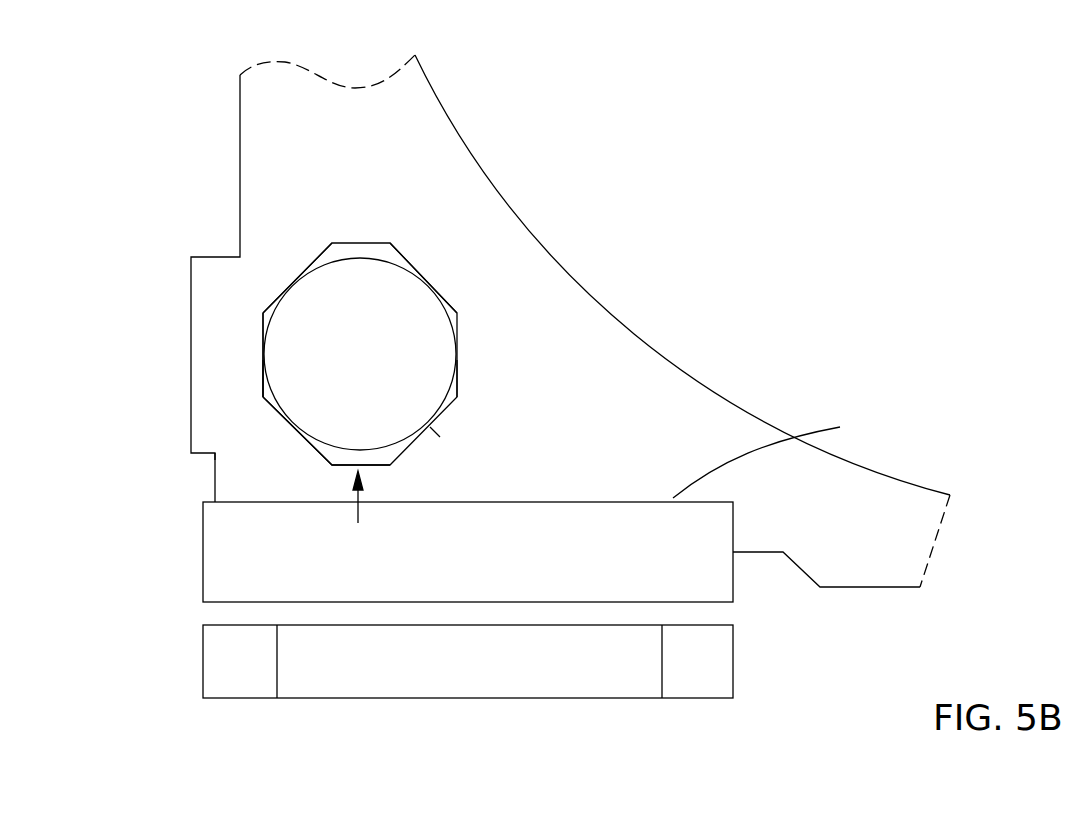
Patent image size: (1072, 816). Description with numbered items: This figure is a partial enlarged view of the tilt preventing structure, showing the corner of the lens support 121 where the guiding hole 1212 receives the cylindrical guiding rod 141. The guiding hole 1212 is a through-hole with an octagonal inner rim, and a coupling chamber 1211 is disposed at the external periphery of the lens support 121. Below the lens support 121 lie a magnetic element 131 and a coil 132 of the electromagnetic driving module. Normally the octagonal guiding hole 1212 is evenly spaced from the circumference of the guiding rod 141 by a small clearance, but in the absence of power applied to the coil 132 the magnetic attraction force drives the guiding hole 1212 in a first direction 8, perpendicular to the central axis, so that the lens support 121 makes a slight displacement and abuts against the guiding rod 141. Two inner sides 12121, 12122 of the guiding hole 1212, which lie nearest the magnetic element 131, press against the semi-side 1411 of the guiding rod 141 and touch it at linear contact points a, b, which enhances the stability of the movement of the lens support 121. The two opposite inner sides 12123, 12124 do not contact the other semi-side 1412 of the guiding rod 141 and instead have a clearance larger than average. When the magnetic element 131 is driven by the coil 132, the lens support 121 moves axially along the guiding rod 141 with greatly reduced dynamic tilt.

The lens support 121 is at (543, 282).
The coupling chamber 1211 is at (782, 455).
The guiding hole 1212 is at (263, 335).
The inner side 12121 is at (265, 398).
The inner side 12122 is at (457, 397).
The inner side 12123 is at (403, 256).
The inner side 12124 is at (318, 257).
The guiding rod 141 is at (310, 337).
The semi-side 1411 is at (333, 464).
The semi-side 1412 is at (367, 243).
The magnetic element 131 is at (220, 560).
The coil 132 is at (220, 655).
The first direction 8 is at (358, 513).
The linear contact point a is at (290, 427).
The linear contact point b is at (430, 427).